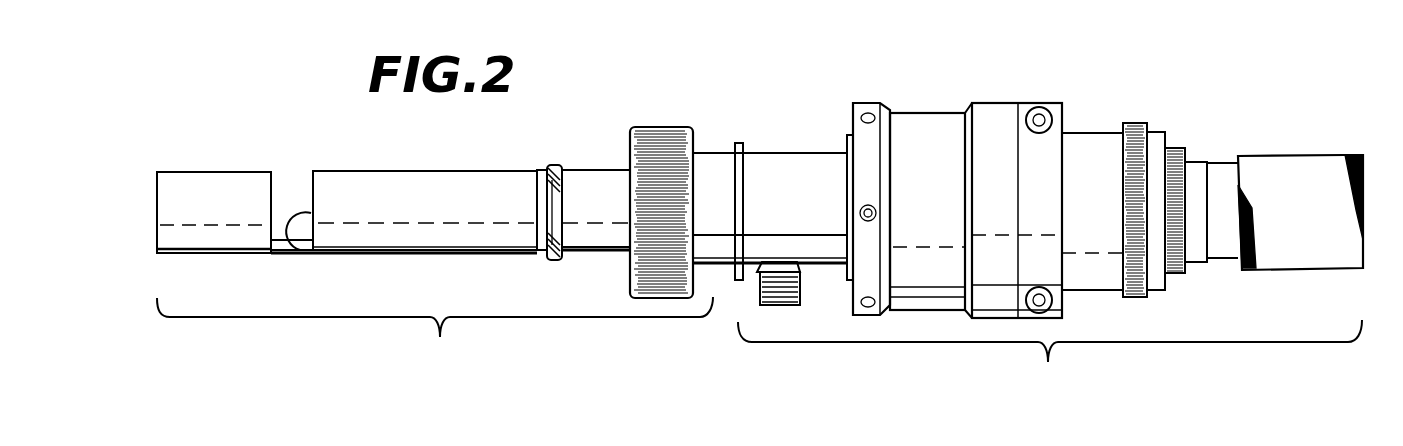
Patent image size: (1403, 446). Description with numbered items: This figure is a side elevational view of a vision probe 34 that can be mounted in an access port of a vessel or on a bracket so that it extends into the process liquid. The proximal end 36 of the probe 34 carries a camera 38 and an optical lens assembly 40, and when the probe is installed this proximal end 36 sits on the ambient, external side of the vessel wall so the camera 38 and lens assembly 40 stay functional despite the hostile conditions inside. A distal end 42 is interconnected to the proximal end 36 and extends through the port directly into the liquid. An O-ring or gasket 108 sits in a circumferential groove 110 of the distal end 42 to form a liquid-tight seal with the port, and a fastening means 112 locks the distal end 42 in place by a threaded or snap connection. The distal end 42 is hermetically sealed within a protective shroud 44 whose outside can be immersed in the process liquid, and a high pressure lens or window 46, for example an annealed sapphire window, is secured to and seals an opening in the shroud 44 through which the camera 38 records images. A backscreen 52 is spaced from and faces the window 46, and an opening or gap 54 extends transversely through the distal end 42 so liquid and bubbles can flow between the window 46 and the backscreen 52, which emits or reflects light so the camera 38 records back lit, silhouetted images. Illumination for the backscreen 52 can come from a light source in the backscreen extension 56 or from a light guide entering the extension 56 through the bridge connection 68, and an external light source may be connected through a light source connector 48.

The vision probe 34 is at (953, 74).
The proximal end 36 is at (1050, 362).
The camera 38 is at (1293, 167).
The optical lens assembly 40 is at (1090, 138).
The distal end 42 is at (435, 337).
The protective shroud 44 is at (453, 228).
The high pressure lens or window 46 is at (300, 250).
The light source connector 48 is at (752, 297).
The backscreen 52 is at (274, 205).
The opening or gap 54 is at (293, 204).
The backscreen extension 56 is at (208, 182).
The bridge connection 68 is at (290, 255).
The O-ring or gasket 108 is at (556, 165).
The circumferential groove 110 is at (541, 195).
The fastening means 112 is at (665, 128).